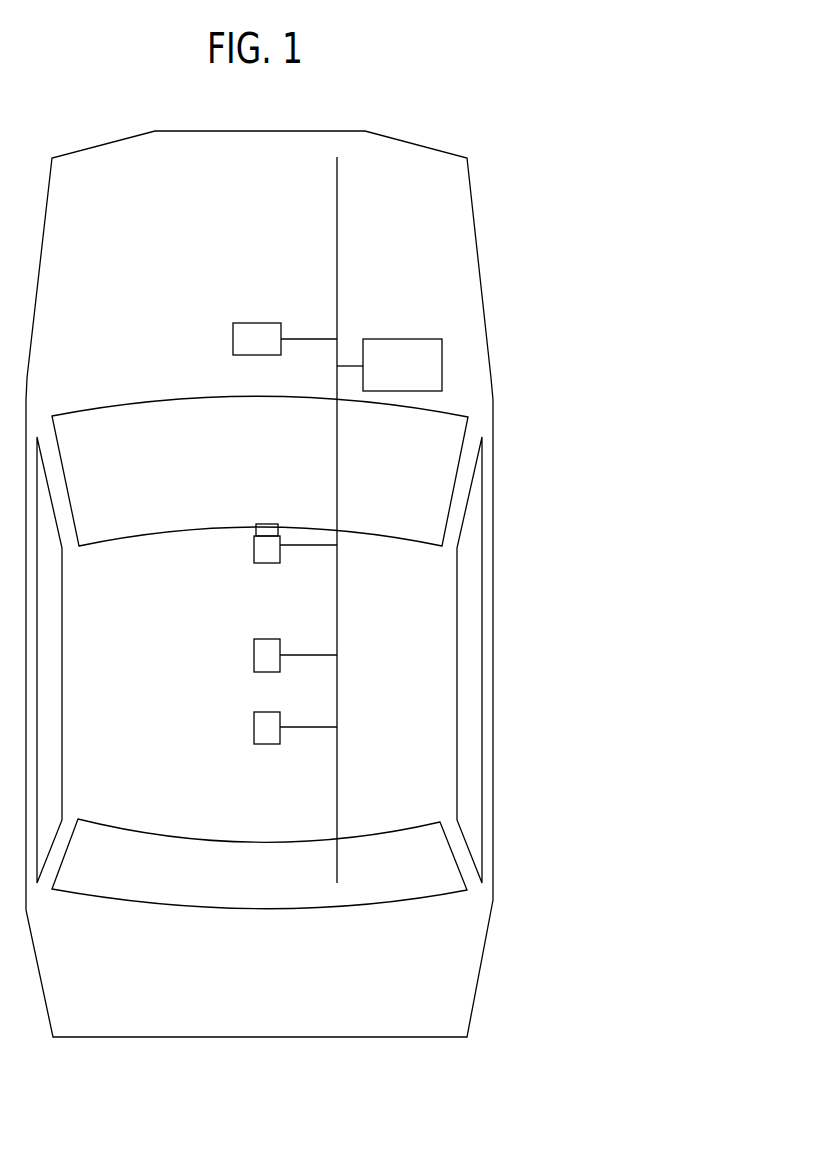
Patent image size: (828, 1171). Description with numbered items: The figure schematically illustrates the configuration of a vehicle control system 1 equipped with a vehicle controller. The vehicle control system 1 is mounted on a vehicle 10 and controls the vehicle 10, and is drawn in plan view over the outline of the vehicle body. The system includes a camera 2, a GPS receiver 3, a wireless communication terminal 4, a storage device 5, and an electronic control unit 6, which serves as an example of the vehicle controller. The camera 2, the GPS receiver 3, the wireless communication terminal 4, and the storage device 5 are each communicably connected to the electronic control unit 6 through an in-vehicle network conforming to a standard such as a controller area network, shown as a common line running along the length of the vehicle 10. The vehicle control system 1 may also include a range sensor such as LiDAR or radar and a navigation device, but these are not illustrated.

The vehicle control system 1 is at (655, 893).
The vehicle 10 is at (493, 897).
The camera 2 is at (254, 548).
The GPS receiver 3 is at (254, 652).
The wireless communication terminal 4 is at (254, 726).
The storage device 5 is at (233, 339).
The electronic control unit 6 is at (442, 361).